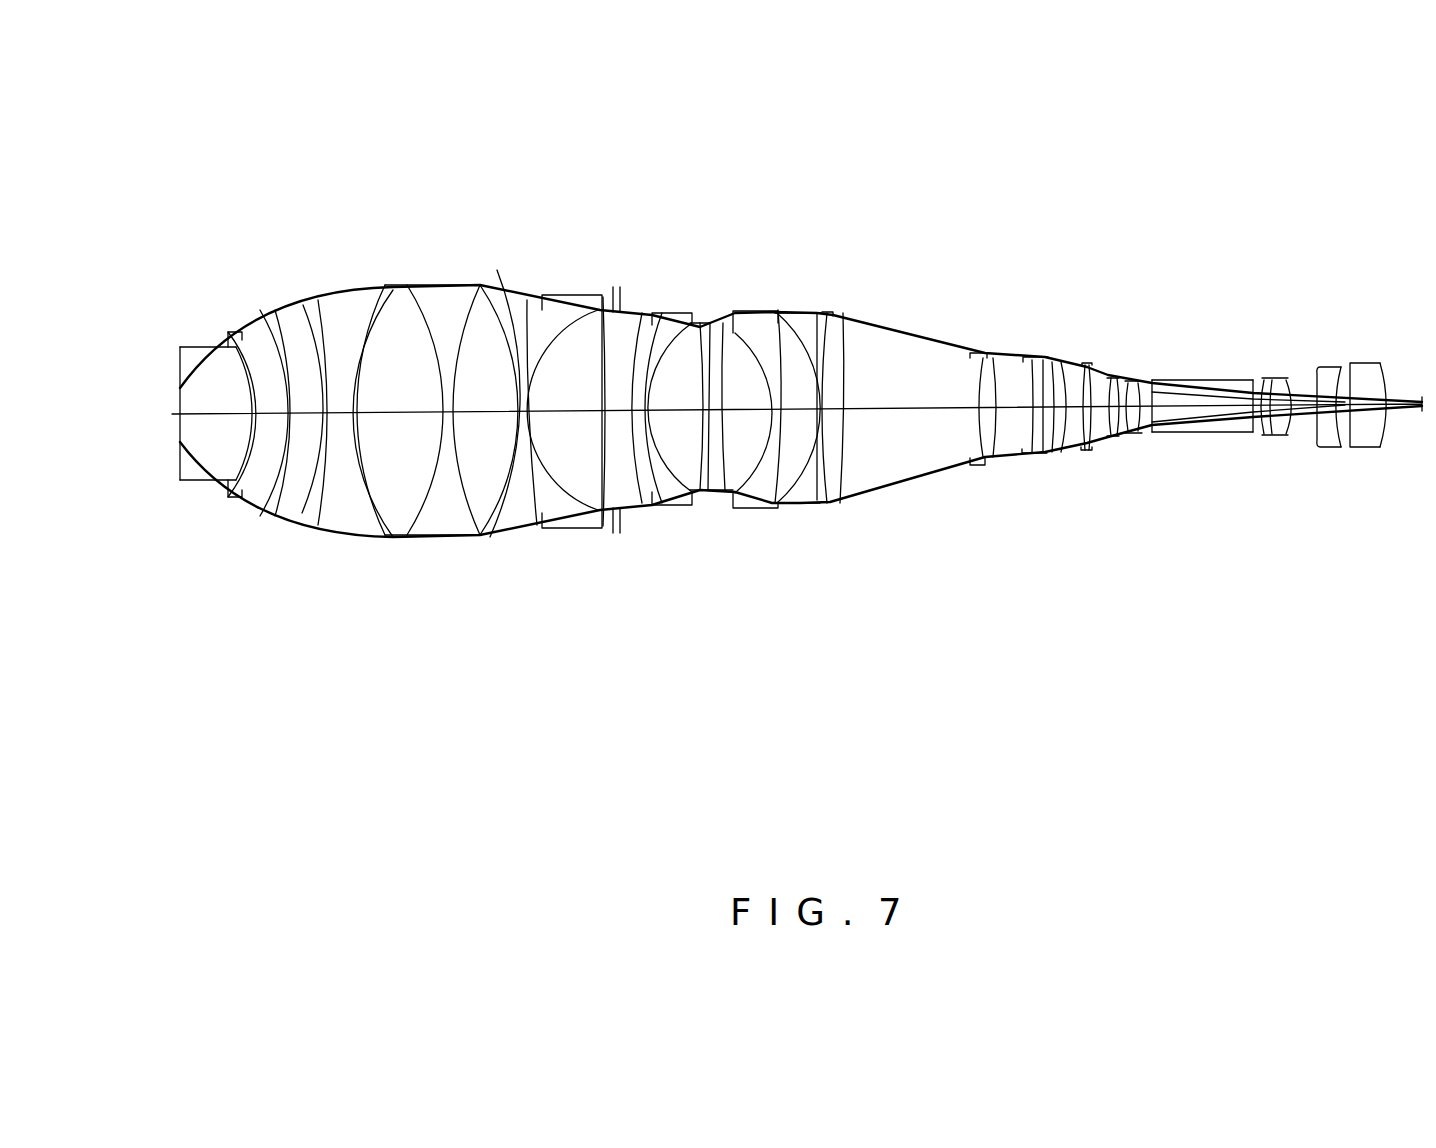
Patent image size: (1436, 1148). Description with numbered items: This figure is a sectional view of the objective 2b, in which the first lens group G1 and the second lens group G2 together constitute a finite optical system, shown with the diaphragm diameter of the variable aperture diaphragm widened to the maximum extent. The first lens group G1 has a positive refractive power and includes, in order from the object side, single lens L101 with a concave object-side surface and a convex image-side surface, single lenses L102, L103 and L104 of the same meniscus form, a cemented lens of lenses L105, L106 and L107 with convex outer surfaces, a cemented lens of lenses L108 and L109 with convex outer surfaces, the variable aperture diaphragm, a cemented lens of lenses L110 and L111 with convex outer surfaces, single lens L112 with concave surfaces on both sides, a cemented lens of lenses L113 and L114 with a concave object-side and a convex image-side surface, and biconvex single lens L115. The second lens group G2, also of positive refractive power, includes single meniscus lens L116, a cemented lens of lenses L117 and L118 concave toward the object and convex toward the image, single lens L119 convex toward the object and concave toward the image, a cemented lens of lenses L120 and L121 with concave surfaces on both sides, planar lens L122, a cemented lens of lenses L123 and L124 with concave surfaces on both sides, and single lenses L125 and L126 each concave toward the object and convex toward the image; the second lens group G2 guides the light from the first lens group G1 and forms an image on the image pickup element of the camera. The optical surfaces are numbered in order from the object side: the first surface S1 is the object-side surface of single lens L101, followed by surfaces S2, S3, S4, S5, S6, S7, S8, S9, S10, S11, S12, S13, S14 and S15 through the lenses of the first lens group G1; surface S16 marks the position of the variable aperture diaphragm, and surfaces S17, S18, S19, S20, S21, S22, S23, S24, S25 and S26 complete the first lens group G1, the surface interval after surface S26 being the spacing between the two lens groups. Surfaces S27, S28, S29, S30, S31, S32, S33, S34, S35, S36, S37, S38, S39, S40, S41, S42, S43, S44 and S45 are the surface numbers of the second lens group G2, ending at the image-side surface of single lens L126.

The objective 2b is at (290, 96).
The first lens group G1 is at (177, 643).
The second lens group G2 is at (898, 642).
The surface number one S1 is at (178, 396).
The surface number two S2 is at (232, 350).
The surface number three S3 is at (238, 338).
The surface number four S4 is at (263, 332).
The surface number five S5 is at (278, 338).
The surface number six S6 is at (307, 333).
The surface number seven S7 is at (320, 335).
The surface number eight S8 is at (340, 333).
The surface number nine S9 is at (367, 338).
The surface number ten S10 is at (420, 330).
The surface number eleven S11 is at (462, 337).
The surface number twelve S12 is at (508, 337).
The surface number thirteen S13 is at (530, 337).
The surface number fourteen S14 is at (545, 340).
The surface number fifteen S15 is at (607, 307).
The surface number sixteen S16 is at (620, 300).
The surface number seventeen S17 is at (640, 330).
The surface number eighteen S18 is at (667, 333).
The surface number nineteen S19 is at (700, 323).
The surface number twenty S20 is at (720, 327).
The surface number twenty-one S21 is at (725, 333).
The surface number twenty-two S22 is at (797, 317).
The surface number twenty-three S23 is at (803, 313).
The surface number twenty-four S24 is at (818, 323).
The surface number twenty-five S25 is at (835, 333).
The surface number twenty-six S26 is at (847, 327).
The surface number twenty-seven S27 is at (950, 353).
The surface number twenty-eight S28 is at (1000, 356).
The surface number twenty-nine S29 is at (1017, 368).
The surface number thirty S30 is at (1032, 368).
The surface number thirty-one S31 is at (1060, 368).
The surface number thirty-two S32 is at (1073, 368).
The surface number thirty-three S33 is at (1100, 368).
The surface number thirty-four S34 is at (1120, 368).
The surface number thirty-five S35 is at (1138, 368).
The surface number thirty-six S36 is at (1152, 368).
The surface number thirty-seven S37 is at (1163, 368).
The surface number thirty-eight S38 is at (1247, 368).
The surface number thirty-nine S39 is at (1258, 368).
The surface number forty S40 is at (1280, 368).
The surface number forty-one S41 is at (1292, 368).
The surface number forty-two S42 is at (1320, 368).
The surface number forty-three S43 is at (1338, 368).
The surface number forty-four S44 is at (1367, 368).
The surface number forty-five S45 is at (1383, 368).
The single lens L101 is at (197, 481).
The single lens L102 is at (232, 495).
The single lens L103 is at (277, 517).
The single lens L104 is at (315, 530).
The lens L105 is at (398, 537).
The lens L106 is at (440, 538).
The lens L107 is at (483, 537).
The lens L108 is at (550, 530).
The lens L109 is at (622, 508).
The lens L110 is at (665, 507).
The lens L111 is at (693, 505).
The single lens L112 is at (713, 500).
The lens L113 is at (762, 510).
The lens L114 is at (773, 510).
The single lens L115 is at (830, 503).
The single lens L116 is at (972, 465).
The lens L117 is at (1023, 455).
The lens L118 is at (1045, 455).
The single lens L119 is at (1085, 453).
The lens L120 is at (1113, 440).
The lens L121 is at (1132, 436).
The planar lens L122 is at (1188, 433).
The lens L123 is at (1257, 437).
The lens L124 is at (1278, 437).
The single lens L125 is at (1328, 448).
The single lens L126 is at (1363, 448).